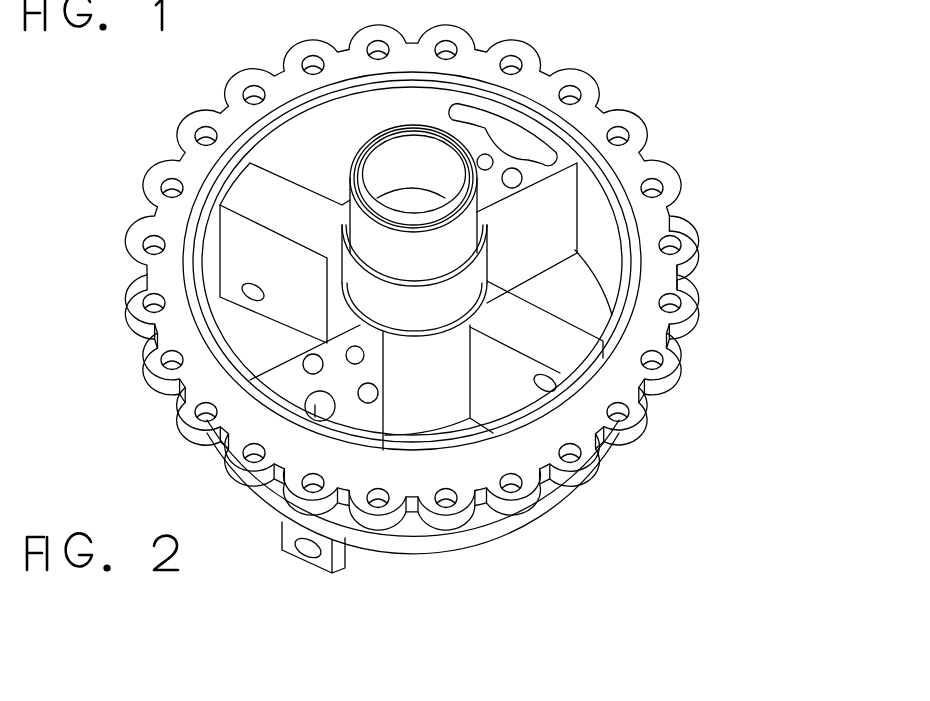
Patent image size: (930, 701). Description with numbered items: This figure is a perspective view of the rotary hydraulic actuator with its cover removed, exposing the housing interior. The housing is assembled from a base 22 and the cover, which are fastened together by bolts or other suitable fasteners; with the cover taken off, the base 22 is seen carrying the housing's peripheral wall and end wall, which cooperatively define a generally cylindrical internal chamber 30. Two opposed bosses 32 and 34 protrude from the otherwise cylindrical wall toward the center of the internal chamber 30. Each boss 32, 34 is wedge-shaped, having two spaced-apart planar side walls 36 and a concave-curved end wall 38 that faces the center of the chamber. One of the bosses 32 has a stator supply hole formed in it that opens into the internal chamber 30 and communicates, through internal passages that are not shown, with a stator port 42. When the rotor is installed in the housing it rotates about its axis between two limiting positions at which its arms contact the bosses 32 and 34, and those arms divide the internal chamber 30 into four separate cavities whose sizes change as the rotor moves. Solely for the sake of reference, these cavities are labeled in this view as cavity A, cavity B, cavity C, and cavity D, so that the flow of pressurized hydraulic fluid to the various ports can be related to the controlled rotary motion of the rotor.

The base 22 is at (603, 119).
The internal chamber 30 is at (600, 210).
The boss 32 is at (292, 400).
The boss 34 is at (517, 160).
The planar side walls 36 is at (426, 96).
The concave-curved end wall 38 is at (368, 340).
The stator port 42 is at (312, 555).
The cavity A is at (492, 422).
The cavity B is at (242, 347).
The cavity C is at (328, 130).
The cavity D is at (582, 296).